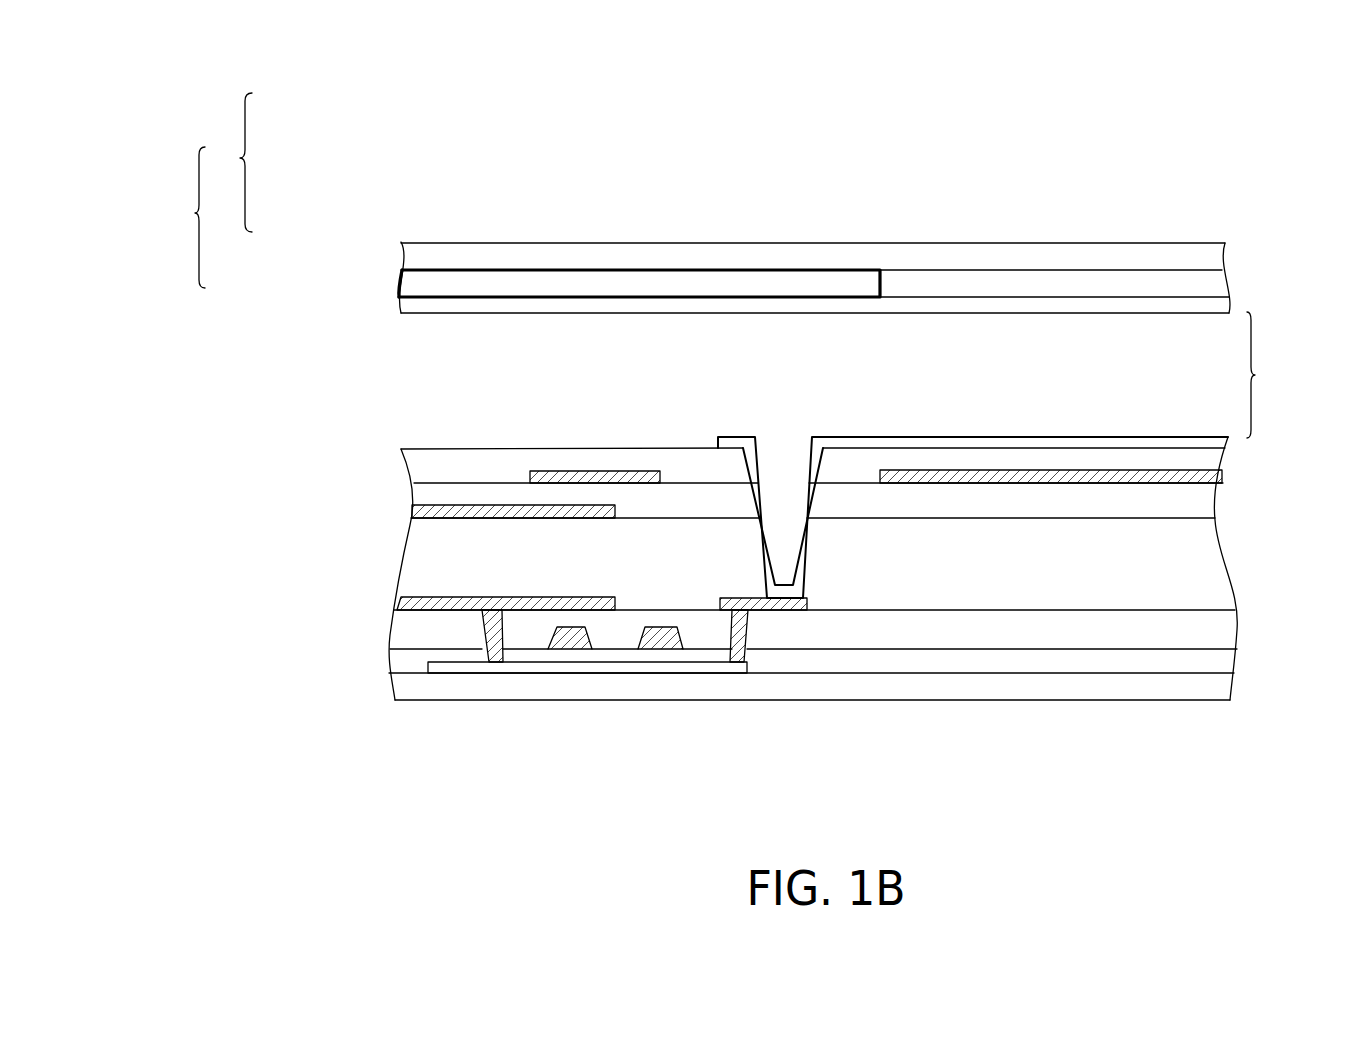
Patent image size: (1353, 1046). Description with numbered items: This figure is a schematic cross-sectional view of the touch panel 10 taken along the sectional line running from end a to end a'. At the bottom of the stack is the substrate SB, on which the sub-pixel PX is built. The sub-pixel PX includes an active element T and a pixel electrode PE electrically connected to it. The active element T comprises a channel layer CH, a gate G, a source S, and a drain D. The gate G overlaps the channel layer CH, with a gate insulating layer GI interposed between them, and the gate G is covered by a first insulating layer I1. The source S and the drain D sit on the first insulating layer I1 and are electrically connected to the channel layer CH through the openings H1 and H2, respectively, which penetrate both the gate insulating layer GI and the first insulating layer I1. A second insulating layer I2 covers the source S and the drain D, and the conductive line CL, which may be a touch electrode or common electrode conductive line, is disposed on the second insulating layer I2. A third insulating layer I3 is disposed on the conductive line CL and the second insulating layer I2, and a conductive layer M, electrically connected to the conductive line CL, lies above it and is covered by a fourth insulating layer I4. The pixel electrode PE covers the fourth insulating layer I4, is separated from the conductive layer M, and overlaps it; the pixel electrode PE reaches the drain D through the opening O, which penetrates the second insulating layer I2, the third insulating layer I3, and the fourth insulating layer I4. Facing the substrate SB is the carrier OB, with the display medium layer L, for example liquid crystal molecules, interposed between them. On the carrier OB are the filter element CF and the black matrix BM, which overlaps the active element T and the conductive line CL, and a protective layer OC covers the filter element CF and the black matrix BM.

The touch panel 10 is at (1343, 790).
The sub-pixel PX is at (201, 219).
The active element T is at (252, 164).
The gate G is at (660, 642).
The channel layer CH is at (599, 668).
The source S is at (465, 608).
The drain D is at (782, 607).
The pixel electrode PE is at (855, 440).
The sectional line end a is at (395, 199).
The sectional line end a' is at (1232, 199).
The black matrix BM is at (628, 283).
The carrier OB is at (1203, 261).
The filter element CF is at (1210, 287).
The protective layer OC is at (1207, 307).
The display medium layer L is at (1263, 375).
The conductive line CL is at (575, 510).
The opening O is at (755, 498).
The conductive layer M is at (1018, 475).
The opening H1 is at (486, 639).
The opening H2 is at (743, 632).
The fourth insulating layer I4 is at (1202, 461).
The third insulating layer I3 is at (1187, 502).
The second insulating layer I2 is at (1200, 566).
The first insulating layer I1 is at (1212, 631).
The gate insulating layer GI is at (413, 662).
The substrate SB is at (415, 689).